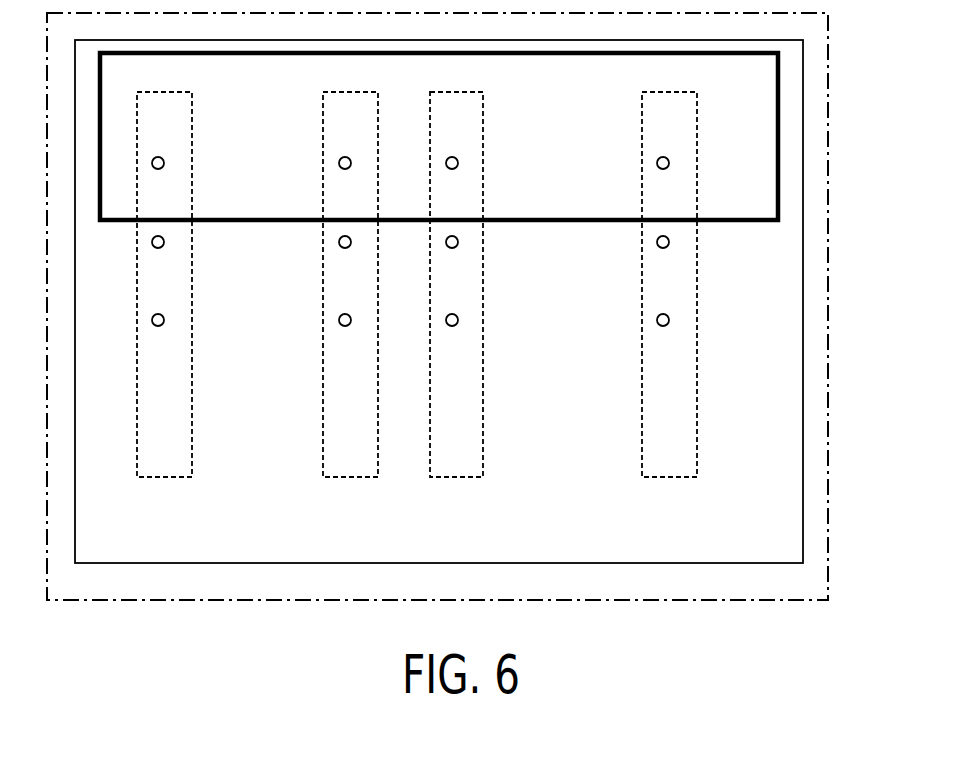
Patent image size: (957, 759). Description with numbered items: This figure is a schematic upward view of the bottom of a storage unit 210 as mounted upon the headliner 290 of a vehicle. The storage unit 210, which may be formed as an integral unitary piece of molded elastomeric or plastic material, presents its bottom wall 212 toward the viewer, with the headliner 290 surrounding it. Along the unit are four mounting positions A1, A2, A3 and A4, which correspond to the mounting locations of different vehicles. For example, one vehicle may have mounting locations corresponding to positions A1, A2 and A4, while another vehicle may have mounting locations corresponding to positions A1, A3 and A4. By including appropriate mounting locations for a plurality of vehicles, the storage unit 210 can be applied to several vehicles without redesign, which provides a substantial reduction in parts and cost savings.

The storage unit 210 is at (757, 127).
The bottom wall 212 is at (275, 156).
The headliner 290 is at (741, 369).
The position A1 is at (168, 462).
The position A2 is at (355, 462).
The position A3 is at (462, 462).
The position A4 is at (677, 462).